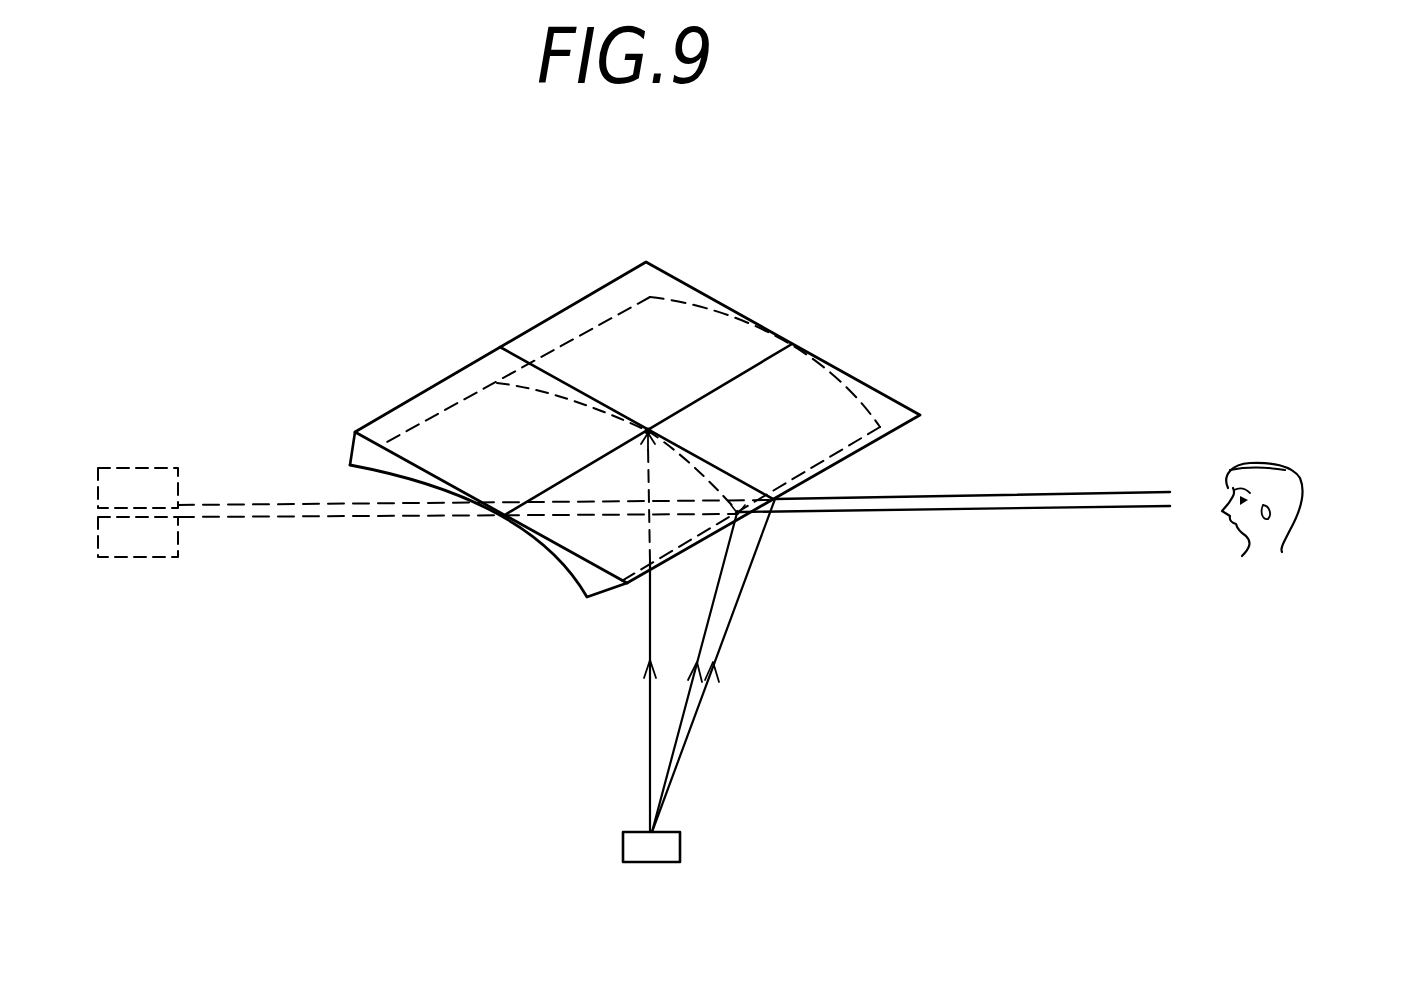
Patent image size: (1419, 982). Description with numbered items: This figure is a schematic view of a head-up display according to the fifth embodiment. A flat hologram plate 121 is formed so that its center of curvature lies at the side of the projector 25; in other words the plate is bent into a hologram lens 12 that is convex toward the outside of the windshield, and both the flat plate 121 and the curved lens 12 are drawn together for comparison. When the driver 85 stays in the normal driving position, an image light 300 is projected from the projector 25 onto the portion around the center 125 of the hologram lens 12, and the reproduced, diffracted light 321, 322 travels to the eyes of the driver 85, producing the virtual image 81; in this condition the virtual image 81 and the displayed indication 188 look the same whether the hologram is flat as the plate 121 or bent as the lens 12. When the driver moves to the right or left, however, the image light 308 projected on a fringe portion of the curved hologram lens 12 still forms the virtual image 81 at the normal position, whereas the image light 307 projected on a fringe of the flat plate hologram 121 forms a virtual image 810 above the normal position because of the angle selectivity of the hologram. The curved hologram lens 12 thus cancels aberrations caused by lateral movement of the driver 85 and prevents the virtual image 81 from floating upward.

The hologram lens 12 is at (572, 579).
The flat hologram plate 121 is at (666, 272).
The center of the hologram lens 125 is at (649, 428).
The projector 25 is at (682, 845).
The image light 300 is at (650, 757).
The image light 307 is at (720, 578).
The image light 308 is at (697, 722).
The reproduced light 321 is at (962, 511).
The reproduced light 322 is at (977, 494).
The driver 85 is at (1305, 497).
The virtual image 188 is at (436, 512).
The virtual image 810 is at (125, 468).
The virtual image 81 is at (122, 557).